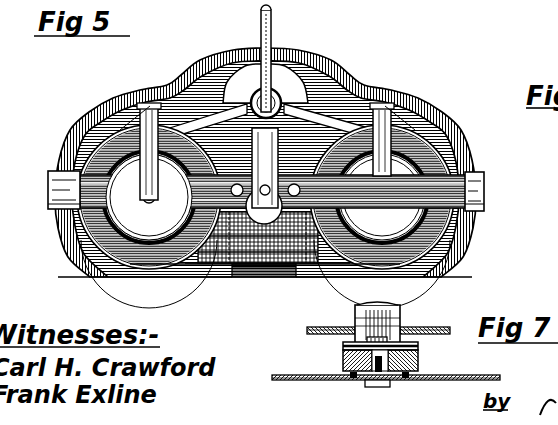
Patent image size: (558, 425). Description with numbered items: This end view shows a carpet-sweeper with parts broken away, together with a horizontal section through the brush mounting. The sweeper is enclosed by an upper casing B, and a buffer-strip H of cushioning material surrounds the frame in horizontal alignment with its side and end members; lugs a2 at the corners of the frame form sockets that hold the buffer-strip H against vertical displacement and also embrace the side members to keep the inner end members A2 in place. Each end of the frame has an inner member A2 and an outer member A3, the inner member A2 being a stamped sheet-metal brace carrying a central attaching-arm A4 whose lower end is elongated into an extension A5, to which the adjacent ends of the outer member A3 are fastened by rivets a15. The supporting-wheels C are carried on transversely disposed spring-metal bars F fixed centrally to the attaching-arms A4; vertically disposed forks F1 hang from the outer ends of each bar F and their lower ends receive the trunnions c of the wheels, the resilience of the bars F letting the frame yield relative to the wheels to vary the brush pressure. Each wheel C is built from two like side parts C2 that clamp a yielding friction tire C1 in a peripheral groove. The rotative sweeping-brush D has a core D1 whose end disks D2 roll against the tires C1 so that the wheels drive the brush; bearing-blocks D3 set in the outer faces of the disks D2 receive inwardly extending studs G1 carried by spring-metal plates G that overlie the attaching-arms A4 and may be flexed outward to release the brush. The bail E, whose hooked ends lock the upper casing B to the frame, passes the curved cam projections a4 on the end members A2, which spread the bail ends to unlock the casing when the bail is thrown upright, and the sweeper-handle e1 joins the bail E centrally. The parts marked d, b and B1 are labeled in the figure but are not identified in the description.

In FIG. 5, the upper casing B is at (265, 162).
In FIG. 7, the upper casing B is at (343, 345).
In FIG. 5, the supporting-wheels C is at (265, 197).
In FIG. 5, the tires C1 is at (422, 266).
In FIG. 5, the side parts of wheel C2 is at (97, 257).
In FIG. 5, the trunnions c is at (142, 196).
In FIG. 5, the lugs a2 is at (49, 177).
In FIG. 5, the buffer-strip H is at (56, 204).
In FIG. 5, the spring-metal bars F is at (265, 151).
In FIG. 5, the forks F1 is at (126, 120).
In FIG. 5, the bail E is at (272, 64).
In FIG. 5, the sweeper-handle e1 is at (261, 22).
In FIG. 5, the cam projections a4 is at (286, 58).
In FIG. 5, the inner end members A2 is at (268, 122).
In FIG. 5, the outer end members A3 is at (274, 191).
In FIG. 7, the outer end members A3 is at (326, 380).
In FIG. 5, the central strut d is at (264, 176).
In FIG. 5, the spring-metal plates G is at (282, 189).
In FIG. 7, the spring-metal plates G is at (385, 382).
In FIG. 7, the studs G1 is at (418, 362).
In FIG. 5, the sweeping-brush D is at (244, 280).
In FIG. 5, the brush core D1 is at (258, 241).
In FIG. 7, the brush core D1 is at (402, 315).
In FIG. 5, the disks D2 is at (258, 237).
In FIG. 7, the disks D2 is at (420, 344).
In FIG. 7, the bearing-blocks D3 is at (343, 362).
In FIG. 5, the brush b is at (264, 284).
In FIG. 7, the attaching-arm A4 is at (368, 350).
In FIG. 5, the extensions A5 is at (213, 210).
In FIG. 7, the extensions A5 is at (422, 374).
In FIG. 5, the rivets a15 is at (230, 210).
In FIG. 7, the rivets a15 is at (353, 379).
In FIG. 7, the washer plate B1 is at (345, 326).